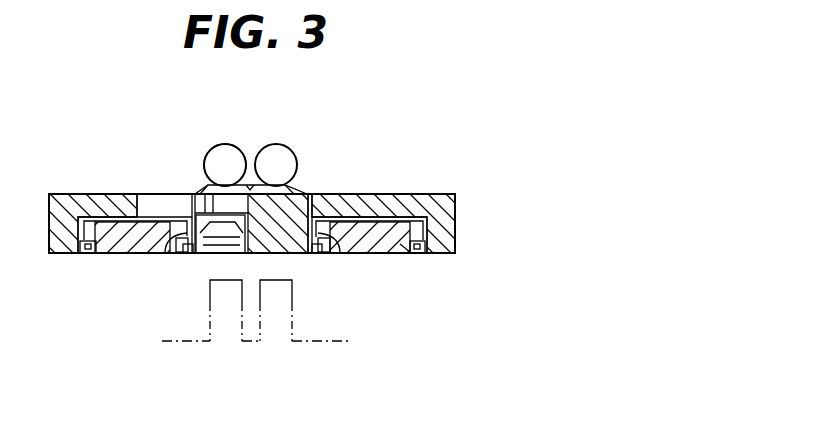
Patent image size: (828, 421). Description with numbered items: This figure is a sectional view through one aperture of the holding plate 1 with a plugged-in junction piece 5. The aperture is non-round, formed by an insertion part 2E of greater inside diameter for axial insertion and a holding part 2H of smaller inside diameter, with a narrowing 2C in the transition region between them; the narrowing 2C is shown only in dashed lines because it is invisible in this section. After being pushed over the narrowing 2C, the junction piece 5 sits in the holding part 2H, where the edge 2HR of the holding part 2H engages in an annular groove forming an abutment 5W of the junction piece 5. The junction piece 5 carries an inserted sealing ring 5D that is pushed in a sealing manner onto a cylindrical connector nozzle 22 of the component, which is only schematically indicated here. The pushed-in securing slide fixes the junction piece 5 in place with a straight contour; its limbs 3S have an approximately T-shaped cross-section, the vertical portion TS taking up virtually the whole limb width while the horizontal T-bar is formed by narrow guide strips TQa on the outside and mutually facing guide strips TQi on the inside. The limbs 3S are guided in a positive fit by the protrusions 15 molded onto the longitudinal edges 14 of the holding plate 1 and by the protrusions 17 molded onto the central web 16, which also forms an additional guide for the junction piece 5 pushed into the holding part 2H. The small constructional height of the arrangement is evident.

The holding plate 1 is at (435, 202).
The longitudinal edges 14 is at (447, 227).
The protrusions 15 is at (82, 246).
The central web 16 is at (292, 230).
The protrusions 17 is at (188, 253).
The insertion part 2E is at (148, 203).
The narrowing 2C is at (197, 193).
The edge of the holding part 2HR is at (305, 193).
The holding part 2H is at (330, 145).
The limbs 3S is at (380, 240).
The junction piece 5 is at (238, 150).
The abutment 5W is at (226, 158).
The sealing ring 5D is at (240, 253).
The vertical portion TS is at (112, 240).
The inside guide strips TQi is at (172, 240).
The outside guide strips TQa is at (405, 245).
The connector nozzle 22 is at (268, 335).